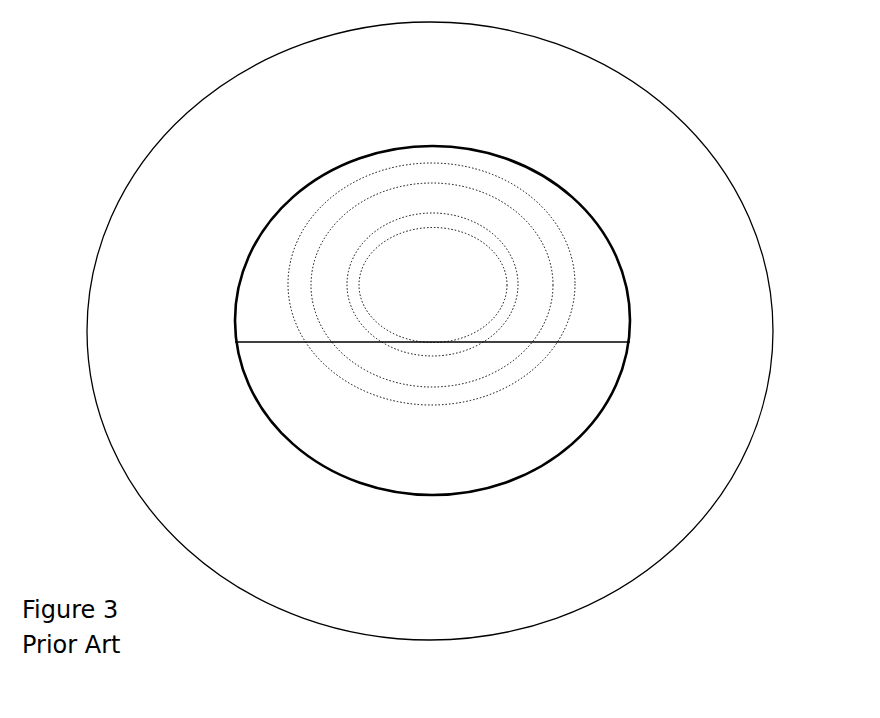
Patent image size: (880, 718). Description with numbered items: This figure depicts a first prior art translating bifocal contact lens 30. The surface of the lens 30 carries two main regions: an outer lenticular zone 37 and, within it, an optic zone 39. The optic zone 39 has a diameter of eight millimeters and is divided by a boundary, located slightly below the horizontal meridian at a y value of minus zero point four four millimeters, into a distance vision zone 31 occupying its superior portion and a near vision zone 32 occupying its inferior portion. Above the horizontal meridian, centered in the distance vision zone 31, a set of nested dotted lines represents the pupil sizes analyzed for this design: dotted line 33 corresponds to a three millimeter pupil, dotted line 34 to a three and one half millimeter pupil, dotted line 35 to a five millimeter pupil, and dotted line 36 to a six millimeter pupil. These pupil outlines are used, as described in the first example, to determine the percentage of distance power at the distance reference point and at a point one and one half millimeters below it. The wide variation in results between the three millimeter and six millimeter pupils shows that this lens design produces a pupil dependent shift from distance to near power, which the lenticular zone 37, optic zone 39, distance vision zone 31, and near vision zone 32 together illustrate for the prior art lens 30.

The lens 30 is at (738, 502).
The distance vision zone 31 is at (423, 254).
The near vision zone 32 is at (424, 452).
The dotted line 33 is at (409, 571).
The dotted line 34 is at (485, 247).
The dotted line 35 is at (508, 255).
The dotted line 36 is at (552, 261).
The lenticular zone 37 is at (575, 267).
The optic zone 39 is at (630, 303).